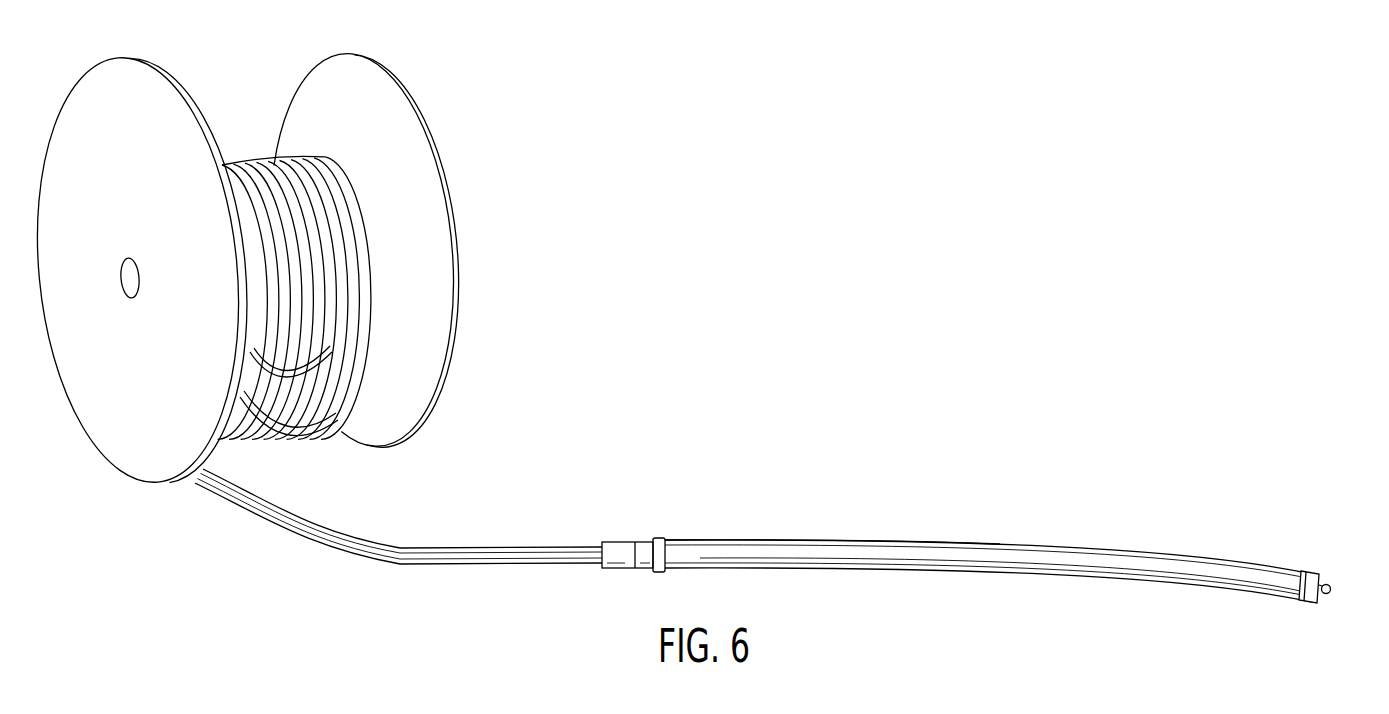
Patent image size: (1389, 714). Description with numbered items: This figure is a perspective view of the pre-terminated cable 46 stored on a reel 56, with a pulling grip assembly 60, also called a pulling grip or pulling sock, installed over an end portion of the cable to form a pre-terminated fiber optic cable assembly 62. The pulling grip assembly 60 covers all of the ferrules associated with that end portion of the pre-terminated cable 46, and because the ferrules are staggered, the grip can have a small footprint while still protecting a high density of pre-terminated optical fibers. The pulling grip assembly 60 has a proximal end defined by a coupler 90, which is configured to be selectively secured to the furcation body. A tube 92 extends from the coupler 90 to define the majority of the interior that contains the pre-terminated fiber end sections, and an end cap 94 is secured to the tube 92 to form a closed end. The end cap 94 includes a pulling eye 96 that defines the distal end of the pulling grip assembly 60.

The reel 56 is at (405, 85).
The pre-terminated cable 46 is at (510, 540).
The pre-terminated fiber optic cable assembly 62 is at (619, 505).
The coupler 90 is at (645, 541).
The tube 92 is at (753, 545).
The pulling grip assembly 60 is at (988, 535).
The end cap 94 is at (1314, 574).
The pulling eye 96 is at (1331, 584).